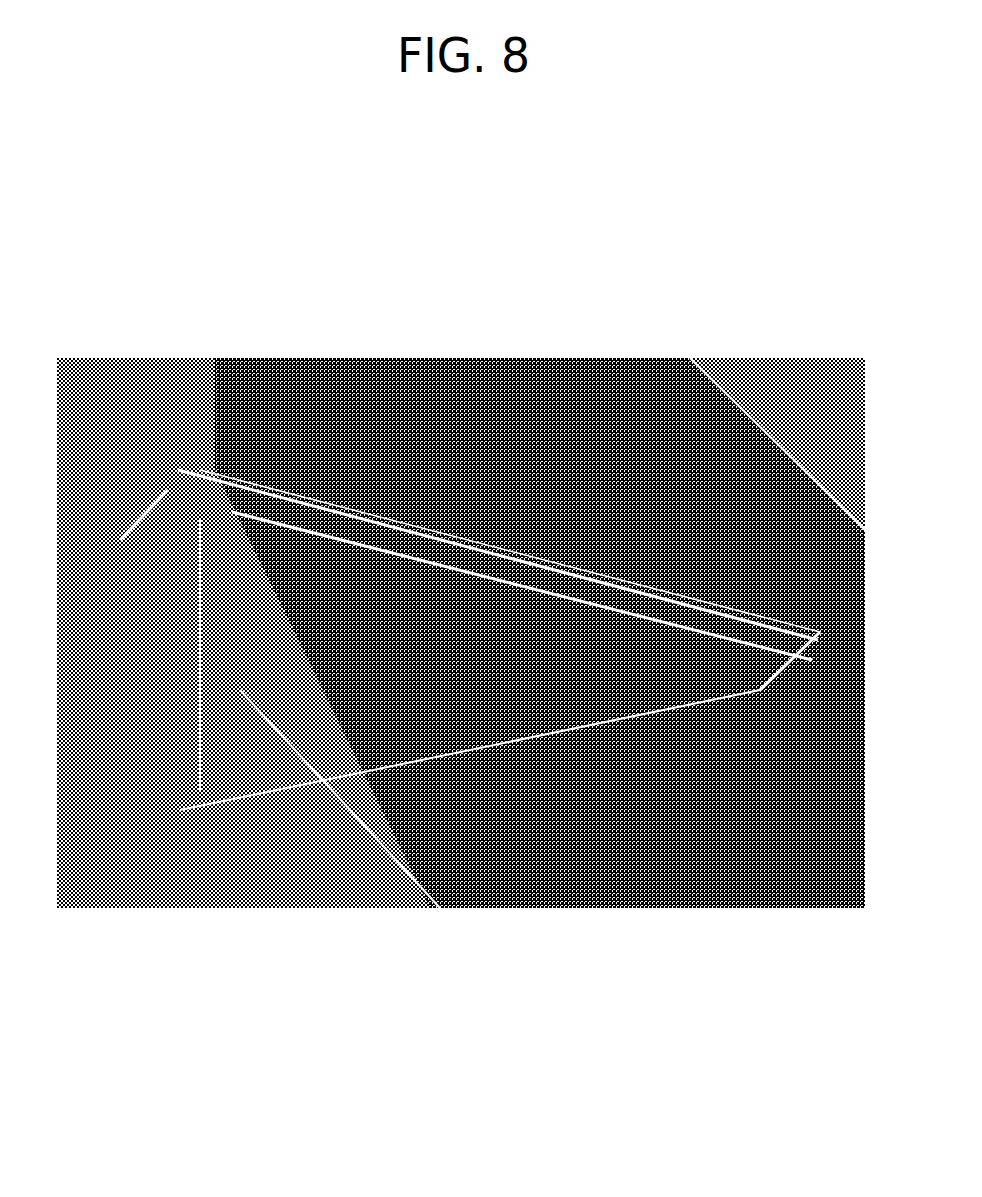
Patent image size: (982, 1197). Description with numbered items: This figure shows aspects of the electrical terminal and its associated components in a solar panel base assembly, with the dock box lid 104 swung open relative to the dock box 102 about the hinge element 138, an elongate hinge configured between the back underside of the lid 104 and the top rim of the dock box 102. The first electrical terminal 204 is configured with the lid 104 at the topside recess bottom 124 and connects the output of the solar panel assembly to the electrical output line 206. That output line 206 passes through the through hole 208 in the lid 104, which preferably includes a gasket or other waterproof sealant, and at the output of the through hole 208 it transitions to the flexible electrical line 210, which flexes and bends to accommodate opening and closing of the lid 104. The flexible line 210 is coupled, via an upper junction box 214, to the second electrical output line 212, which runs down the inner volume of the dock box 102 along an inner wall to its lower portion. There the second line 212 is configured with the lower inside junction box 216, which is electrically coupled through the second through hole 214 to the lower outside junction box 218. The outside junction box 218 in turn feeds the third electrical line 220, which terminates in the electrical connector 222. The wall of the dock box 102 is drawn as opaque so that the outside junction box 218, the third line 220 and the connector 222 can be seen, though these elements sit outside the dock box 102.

The dock box 102 is at (640, 834).
The dock box lid 104 is at (753, 234).
The topside recess bottom 124 is at (603, 469).
The hinge element 138 is at (426, 547).
The first electrical terminal 204 is at (251, 451).
The electrical output line 206 is at (204, 432).
The through hole 208 is at (196, 446).
The flexible electrical line 210 is at (218, 488).
The second electrical output line 212 is at (188, 603).
The second through hole 214 is at (193, 531).
The lower inside junction box 216 is at (178, 807).
The lower outside junction box 218 is at (197, 790).
The third electrical line 220 is at (192, 823).
The electrical connector 222 is at (233, 830).